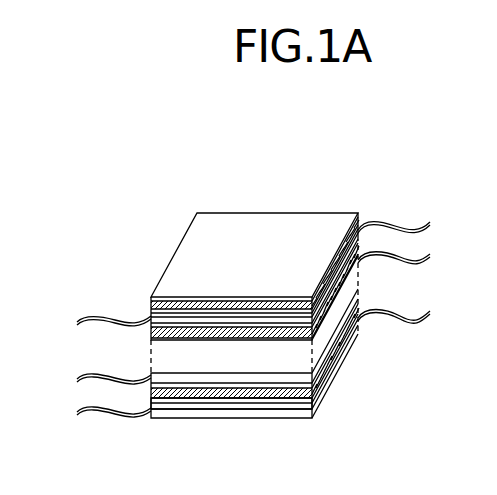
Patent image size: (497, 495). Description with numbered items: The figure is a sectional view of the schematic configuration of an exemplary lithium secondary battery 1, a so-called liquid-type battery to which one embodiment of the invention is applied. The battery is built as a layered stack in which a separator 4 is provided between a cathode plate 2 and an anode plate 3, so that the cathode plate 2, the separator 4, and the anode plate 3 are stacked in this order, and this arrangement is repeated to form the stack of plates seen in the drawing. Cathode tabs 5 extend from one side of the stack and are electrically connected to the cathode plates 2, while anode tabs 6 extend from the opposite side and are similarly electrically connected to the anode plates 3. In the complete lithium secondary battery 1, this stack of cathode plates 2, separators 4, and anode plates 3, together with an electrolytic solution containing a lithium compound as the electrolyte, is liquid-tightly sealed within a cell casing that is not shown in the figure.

The lithium secondary battery 1 is at (212, 207).
The cathode plate 2 is at (150, 306).
The anode plate 3 is at (217, 403).
The separator 4 is at (318, 397).
The cathode tab 5 is at (427, 258).
The anode tab 6 is at (92, 318).